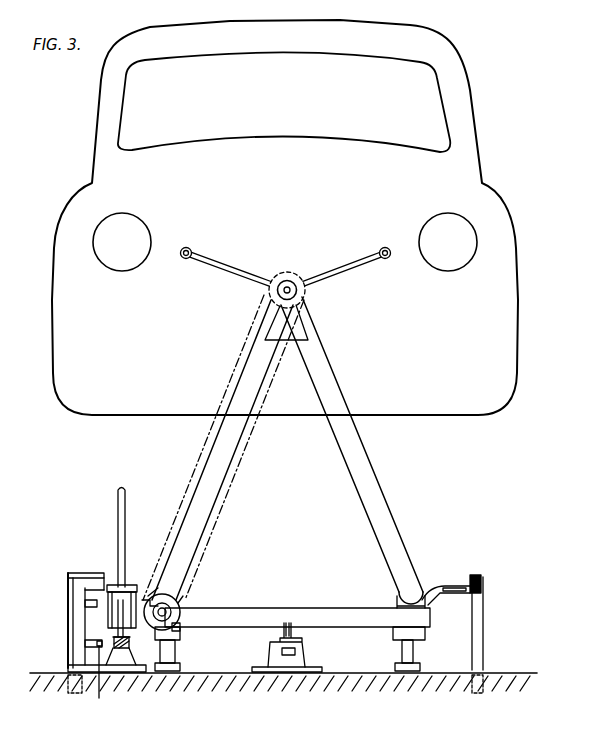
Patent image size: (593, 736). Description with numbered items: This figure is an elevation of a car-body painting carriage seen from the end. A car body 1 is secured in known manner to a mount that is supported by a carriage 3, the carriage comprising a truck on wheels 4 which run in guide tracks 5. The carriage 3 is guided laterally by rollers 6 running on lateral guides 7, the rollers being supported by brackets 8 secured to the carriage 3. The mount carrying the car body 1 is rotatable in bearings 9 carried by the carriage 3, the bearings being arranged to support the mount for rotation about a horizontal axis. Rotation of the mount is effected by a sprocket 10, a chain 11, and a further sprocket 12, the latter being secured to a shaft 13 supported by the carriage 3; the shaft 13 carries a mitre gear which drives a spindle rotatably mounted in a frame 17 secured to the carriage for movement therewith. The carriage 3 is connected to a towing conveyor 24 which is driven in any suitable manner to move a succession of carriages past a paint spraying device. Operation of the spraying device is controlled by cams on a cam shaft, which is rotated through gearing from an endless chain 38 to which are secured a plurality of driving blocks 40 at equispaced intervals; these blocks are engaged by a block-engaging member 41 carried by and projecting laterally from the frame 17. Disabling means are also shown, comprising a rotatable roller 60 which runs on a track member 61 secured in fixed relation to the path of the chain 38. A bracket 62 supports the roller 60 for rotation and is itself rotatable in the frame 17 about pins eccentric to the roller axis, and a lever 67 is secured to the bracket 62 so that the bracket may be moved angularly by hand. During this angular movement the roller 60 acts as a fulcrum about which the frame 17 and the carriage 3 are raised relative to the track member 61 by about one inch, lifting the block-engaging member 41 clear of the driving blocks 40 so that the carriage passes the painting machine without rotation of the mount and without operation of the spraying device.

The car body 1 is at (490, 321).
The carriage 3 is at (303, 618).
The wheels 4 is at (172, 655).
The guide tracks 5 is at (182, 668).
The rollers 6 is at (132, 584).
The lateral guides 7 is at (98, 573).
The brackets 8 is at (433, 599).
The bearings 9 is at (289, 283).
The sprocket 10 is at (291, 286).
The chain 11 is at (232, 476).
The sprocket 12 is at (182, 604).
The shaft 13 is at (176, 618).
The frame 17 is at (190, 597).
The towing conveyor 24 is at (288, 652).
The endless chain 38 is at (85, 604).
The driving blocks 40 is at (87, 600).
The block-engaging member 41 is at (100, 604).
The roller 60 is at (128, 643).
The track member 61 is at (128, 630).
The bracket 62 is at (150, 600).
The lever 67 is at (125, 523).